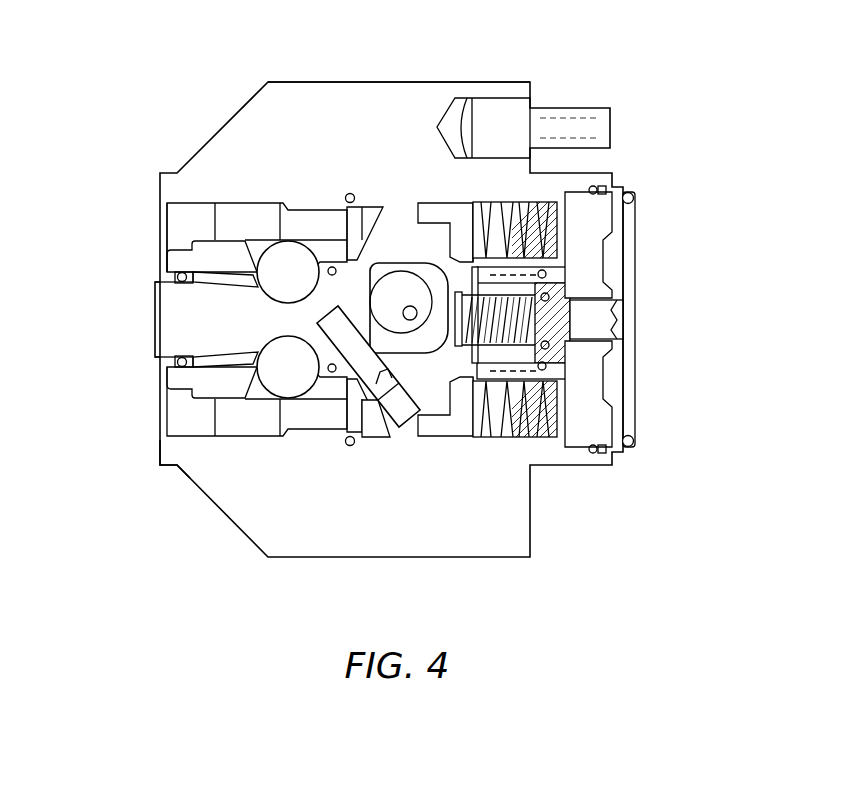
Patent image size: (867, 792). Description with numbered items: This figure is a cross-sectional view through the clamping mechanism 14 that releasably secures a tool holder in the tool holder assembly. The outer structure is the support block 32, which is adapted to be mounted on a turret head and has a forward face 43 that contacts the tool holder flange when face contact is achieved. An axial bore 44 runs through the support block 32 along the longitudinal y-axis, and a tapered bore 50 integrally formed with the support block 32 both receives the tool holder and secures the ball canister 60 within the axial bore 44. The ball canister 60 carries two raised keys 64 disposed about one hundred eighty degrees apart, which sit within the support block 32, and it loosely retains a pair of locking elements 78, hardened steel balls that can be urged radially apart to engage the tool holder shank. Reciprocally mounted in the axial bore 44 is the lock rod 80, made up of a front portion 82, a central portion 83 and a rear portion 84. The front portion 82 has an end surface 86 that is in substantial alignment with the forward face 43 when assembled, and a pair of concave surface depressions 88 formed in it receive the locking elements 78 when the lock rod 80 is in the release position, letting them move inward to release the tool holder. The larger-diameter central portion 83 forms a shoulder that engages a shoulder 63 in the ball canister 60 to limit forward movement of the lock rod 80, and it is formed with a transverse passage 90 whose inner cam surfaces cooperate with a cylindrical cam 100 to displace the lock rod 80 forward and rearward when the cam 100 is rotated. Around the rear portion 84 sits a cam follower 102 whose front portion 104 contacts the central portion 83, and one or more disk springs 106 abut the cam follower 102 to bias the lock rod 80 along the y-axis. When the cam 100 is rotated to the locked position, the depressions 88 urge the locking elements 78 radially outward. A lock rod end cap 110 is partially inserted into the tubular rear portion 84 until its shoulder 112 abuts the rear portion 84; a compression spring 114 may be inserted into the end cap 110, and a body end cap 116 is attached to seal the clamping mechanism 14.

The clamping mechanism 14 is at (222, 83).
The support block 32 is at (302, 82).
The forward face 43 is at (158, 455).
The axial bore 44 is at (182, 220).
The tapered bore 50 is at (185, 432).
The ball canister 60 is at (170, 243).
The shoulder 63 is at (387, 207).
The raised keys 64 is at (230, 233).
The locking elements 78 is at (272, 408).
The lock rod 80 is at (152, 289).
The front portion 82 is at (156, 318).
The central portion 83 is at (398, 213).
The rear portion 84 is at (532, 203).
The end surface 86 is at (157, 349).
The concave surface depressions 88 is at (283, 380).
The transverse passage 90 is at (457, 442).
The cylindrical cam 100 is at (342, 396).
The cam follower 102 is at (508, 440).
The front portion 104 is at (417, 213).
The disk springs 106 is at (508, 345).
The lock rod end cap 110 is at (572, 291).
The shoulder 112 is at (535, 247).
The compression spring 114 is at (568, 405).
The body end cap 116 is at (636, 310).